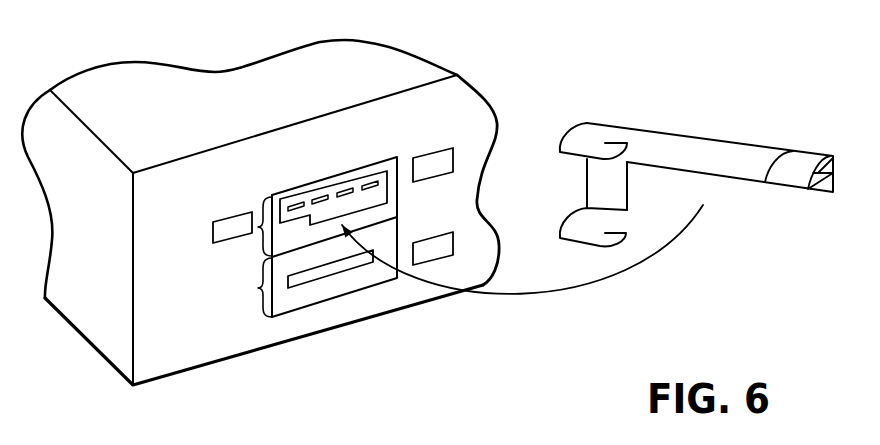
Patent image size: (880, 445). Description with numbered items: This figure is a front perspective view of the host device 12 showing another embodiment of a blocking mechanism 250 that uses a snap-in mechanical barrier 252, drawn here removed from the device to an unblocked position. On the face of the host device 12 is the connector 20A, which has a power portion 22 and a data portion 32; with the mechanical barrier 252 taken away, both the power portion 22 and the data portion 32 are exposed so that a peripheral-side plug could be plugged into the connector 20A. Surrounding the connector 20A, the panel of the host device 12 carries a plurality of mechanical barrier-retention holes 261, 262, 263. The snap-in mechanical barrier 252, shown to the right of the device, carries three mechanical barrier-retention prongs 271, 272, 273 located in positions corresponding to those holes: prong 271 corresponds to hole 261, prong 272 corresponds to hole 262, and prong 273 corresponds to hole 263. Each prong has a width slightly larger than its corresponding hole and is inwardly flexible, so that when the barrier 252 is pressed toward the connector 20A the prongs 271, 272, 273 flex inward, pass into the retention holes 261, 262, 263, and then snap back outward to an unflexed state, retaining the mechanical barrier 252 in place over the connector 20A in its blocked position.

The host device 12 is at (185, 90).
The connector 20A is at (360, 166).
The power portion 22 is at (256, 230).
The data portion 32 is at (258, 288).
The mechanical barrier-retention hole 261 is at (232, 225).
The mechanical barrier-retention hole 262 is at (432, 167).
The mechanical barrier-retention hole 263 is at (433, 250).
The blocking mechanism 250 is at (673, 194).
The snap-in mechanical barrier 252 is at (658, 131).
The mechanical barrier-retention prong 271 is at (798, 170).
The mechanical barrier-retention prong 272 is at (590, 140).
The mechanical barrier-retention prong 273 is at (583, 227).